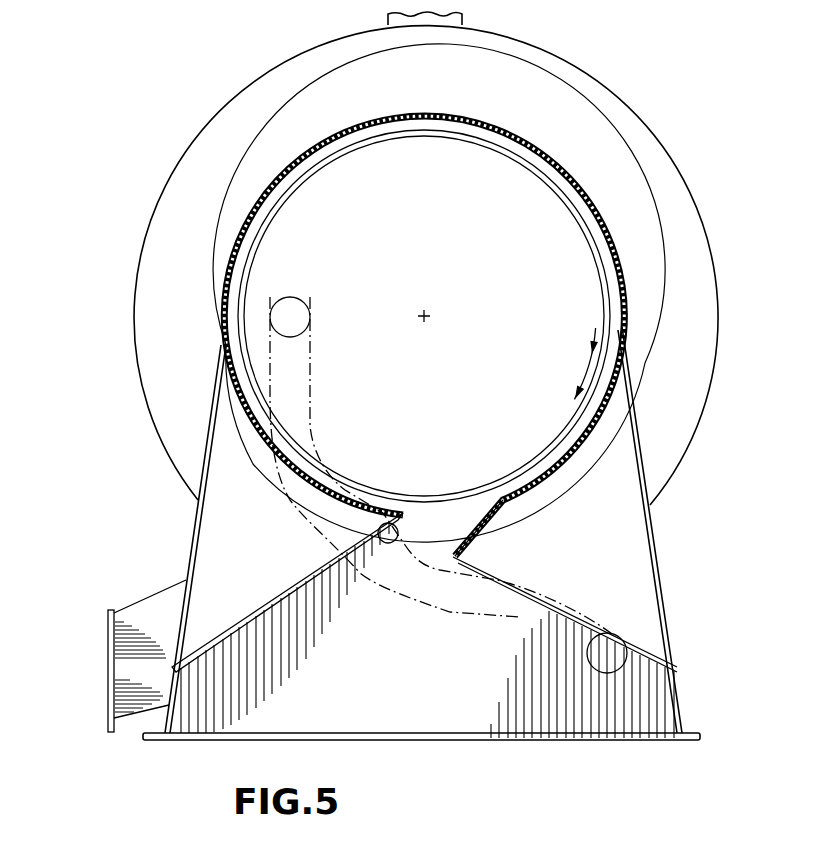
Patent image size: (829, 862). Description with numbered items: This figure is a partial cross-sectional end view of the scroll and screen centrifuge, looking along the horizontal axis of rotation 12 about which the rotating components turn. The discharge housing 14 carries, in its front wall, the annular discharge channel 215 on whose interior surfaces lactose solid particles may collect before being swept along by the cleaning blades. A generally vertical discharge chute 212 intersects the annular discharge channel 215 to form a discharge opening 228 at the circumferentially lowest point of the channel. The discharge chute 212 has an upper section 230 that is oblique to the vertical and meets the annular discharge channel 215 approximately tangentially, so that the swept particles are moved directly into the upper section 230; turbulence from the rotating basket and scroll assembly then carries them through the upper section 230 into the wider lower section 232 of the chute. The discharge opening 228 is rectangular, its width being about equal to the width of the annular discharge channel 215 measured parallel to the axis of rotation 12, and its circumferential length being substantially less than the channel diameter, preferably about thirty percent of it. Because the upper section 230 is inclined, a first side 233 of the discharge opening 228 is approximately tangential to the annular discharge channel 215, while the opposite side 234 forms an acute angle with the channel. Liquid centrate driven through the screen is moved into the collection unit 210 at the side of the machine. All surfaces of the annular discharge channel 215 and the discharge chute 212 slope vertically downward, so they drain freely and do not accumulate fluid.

The discharge housing 14 is at (603, 82).
The annular discharge channel 215 is at (588, 223).
The axis of rotation 12 is at (434, 311).
The discharge opening 228 is at (428, 520).
The first side 233 is at (500, 512).
The opposite side 234 is at (365, 537).
The upper section 230 is at (478, 538).
The lower section 232 is at (482, 598).
The discharge chute 212 is at (430, 731).
The collection unit 210 is at (108, 683).